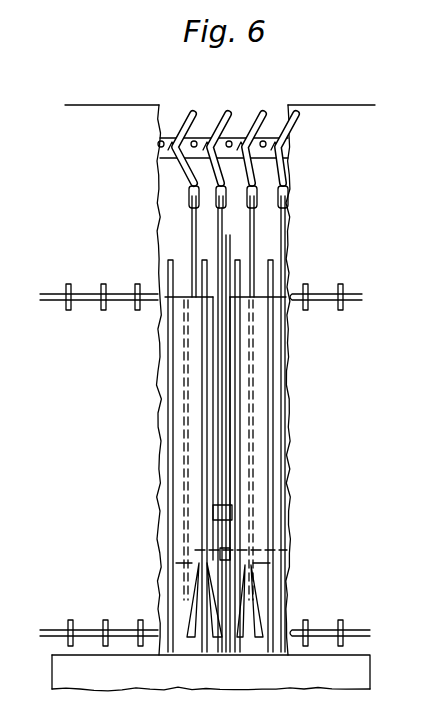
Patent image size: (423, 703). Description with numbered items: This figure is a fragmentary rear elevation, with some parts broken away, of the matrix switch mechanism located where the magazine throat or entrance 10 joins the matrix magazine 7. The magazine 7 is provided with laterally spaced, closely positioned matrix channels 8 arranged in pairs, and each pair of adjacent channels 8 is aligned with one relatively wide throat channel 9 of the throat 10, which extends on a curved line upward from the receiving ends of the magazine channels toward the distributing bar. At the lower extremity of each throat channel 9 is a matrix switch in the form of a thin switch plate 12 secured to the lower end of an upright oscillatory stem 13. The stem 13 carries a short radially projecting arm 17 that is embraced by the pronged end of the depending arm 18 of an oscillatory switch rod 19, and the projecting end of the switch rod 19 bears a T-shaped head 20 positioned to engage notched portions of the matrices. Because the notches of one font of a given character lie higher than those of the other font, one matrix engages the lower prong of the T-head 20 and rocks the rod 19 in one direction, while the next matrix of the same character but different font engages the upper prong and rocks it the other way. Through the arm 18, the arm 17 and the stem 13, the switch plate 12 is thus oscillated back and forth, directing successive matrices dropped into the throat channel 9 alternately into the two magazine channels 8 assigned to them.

The matrix magazine 7 is at (211, 673).
The matrix channels 8 is at (240, 642).
The throat channels 9 is at (217, 407).
The magazine throat 10 is at (207, 380).
The switch plate 12 is at (280, 550).
The oscillatory stem 13 is at (187, 253).
The radially projecting arm 17 is at (196, 208).
The depending arm 18 is at (224, 205).
The switch rod 19 is at (193, 141).
The T-shaped head 20 is at (283, 112).